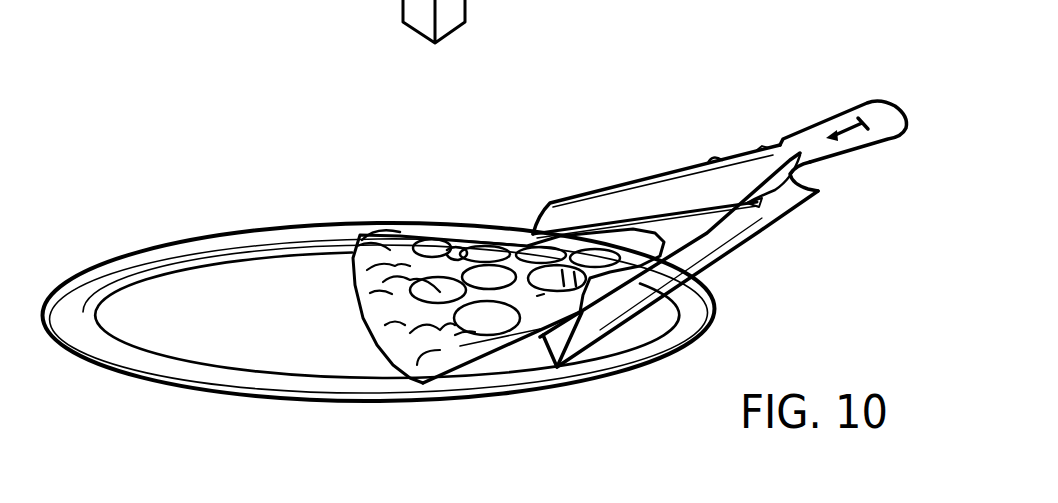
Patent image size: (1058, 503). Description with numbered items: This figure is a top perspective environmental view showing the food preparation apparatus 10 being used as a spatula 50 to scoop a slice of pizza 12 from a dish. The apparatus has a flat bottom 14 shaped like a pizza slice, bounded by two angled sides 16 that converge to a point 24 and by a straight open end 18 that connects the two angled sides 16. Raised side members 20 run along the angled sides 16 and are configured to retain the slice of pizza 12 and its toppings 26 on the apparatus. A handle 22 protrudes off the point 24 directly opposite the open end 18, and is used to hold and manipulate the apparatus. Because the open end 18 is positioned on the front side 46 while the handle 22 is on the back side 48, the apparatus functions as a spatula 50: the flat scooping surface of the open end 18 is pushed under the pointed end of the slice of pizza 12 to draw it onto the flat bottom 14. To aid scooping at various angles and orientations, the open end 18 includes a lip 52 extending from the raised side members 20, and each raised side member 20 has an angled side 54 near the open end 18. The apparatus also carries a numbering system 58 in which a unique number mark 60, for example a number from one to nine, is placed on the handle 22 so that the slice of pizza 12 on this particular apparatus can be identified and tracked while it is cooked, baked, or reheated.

The food preparation apparatus 10 is at (740, 223).
The slice of pizza 12 is at (508, 263).
The flat bottom 14 is at (650, 257).
The angled sides 16 is at (674, 265).
The open end 18 is at (498, 377).
The raised side members 20 is at (640, 198).
The handle 22 is at (854, 124).
The point 24 is at (850, 178).
The toppings 26 is at (519, 285).
The front side 46 is at (935, 109).
The back side 48 is at (441, 372).
The spatula 50 is at (666, 325).
The lip 52 is at (557, 368).
The angled side 54 is at (534, 220).
The numbering system 58 is at (816, 94).
The unique number mark 60 is at (713, 160).